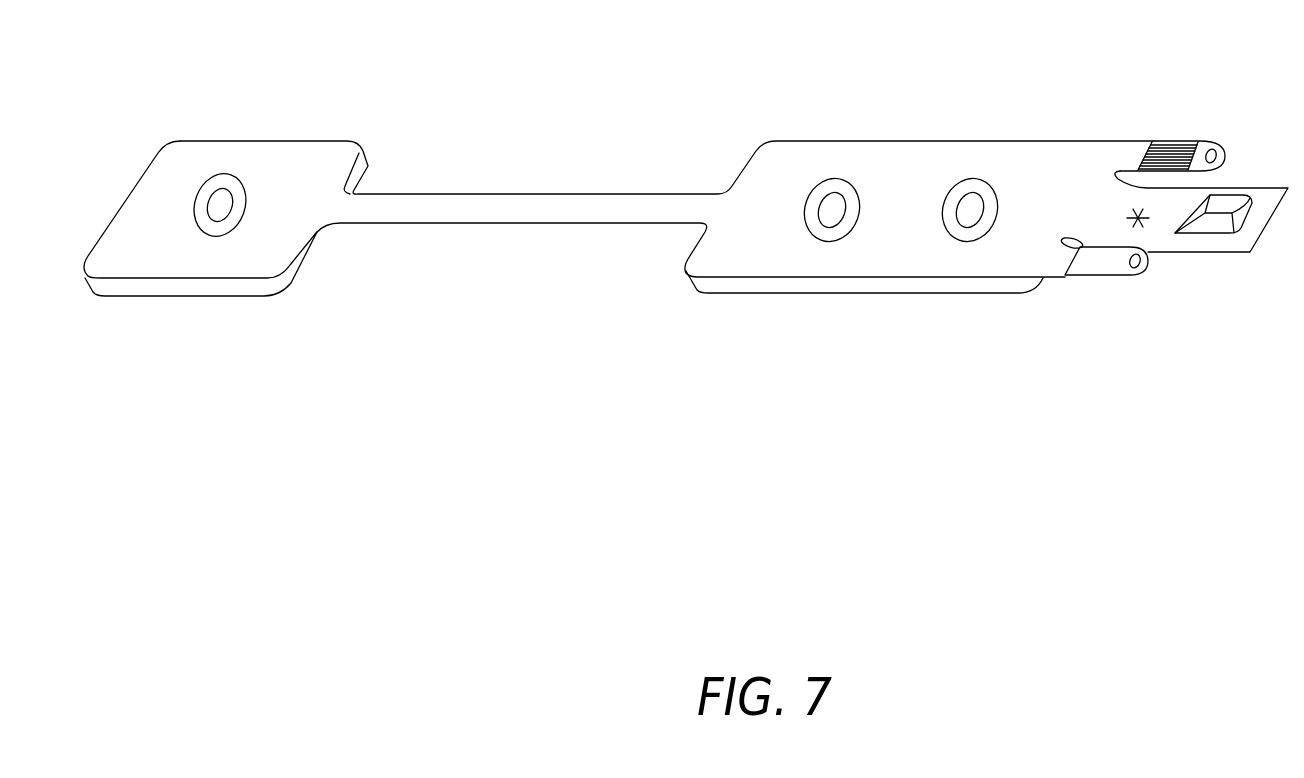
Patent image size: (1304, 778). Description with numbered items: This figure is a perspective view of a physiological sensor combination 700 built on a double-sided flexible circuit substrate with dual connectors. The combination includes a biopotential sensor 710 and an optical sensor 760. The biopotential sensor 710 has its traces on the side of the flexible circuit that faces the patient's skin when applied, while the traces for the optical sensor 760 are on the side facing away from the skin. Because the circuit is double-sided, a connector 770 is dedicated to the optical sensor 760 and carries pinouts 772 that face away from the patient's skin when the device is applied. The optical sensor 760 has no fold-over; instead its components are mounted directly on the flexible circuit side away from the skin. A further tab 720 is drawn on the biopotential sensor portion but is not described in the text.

The physiological sensor combination 700 is at (738, 63).
The biopotential sensor 710 is at (918, 312).
The lower tab 720 is at (1062, 253).
The optical sensor 760 is at (1203, 312).
The connector 770 is at (1125, 152).
The pinouts 772 is at (1183, 142).